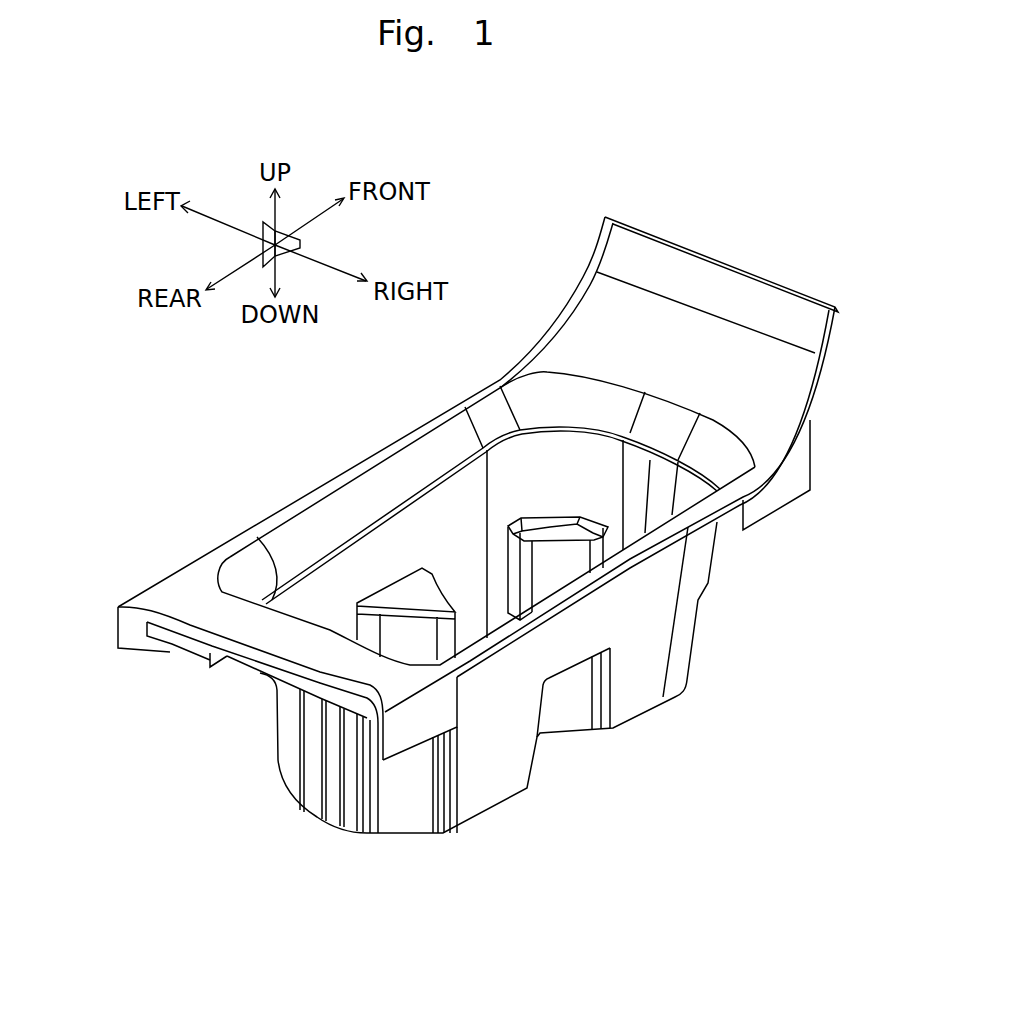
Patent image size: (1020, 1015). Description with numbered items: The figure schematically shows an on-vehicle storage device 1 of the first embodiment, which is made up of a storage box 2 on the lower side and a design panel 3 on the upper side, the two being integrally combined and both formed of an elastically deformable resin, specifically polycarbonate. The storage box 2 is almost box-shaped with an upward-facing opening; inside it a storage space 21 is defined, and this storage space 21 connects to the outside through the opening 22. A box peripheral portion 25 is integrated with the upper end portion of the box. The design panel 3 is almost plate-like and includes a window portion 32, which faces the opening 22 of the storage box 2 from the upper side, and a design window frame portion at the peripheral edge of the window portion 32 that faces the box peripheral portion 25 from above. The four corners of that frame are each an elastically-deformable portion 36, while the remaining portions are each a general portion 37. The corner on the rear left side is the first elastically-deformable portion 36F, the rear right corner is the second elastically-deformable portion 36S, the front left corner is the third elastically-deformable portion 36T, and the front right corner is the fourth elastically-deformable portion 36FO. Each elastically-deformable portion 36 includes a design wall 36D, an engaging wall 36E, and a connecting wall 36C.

The on-vehicle storage device 1 is at (232, 424).
The storage box 2 is at (728, 598).
The design panel 3 is at (579, 258).
The storage space 21 is at (553, 490).
The opening 22 is at (381, 544).
The box peripheral portion 25 is at (175, 633).
The window portion 32 is at (412, 436).
The elastically-deformable portion 36 is at (181, 587).
The connecting wall 36C is at (128, 624).
The design wall 36D is at (190, 604).
The engaging wall 36E is at (195, 655).
The first elastically-deformable portion 36F is at (203, 567).
The fourth elastically-deformable portion 36FO is at (753, 467).
The second elastically-deformable portion 36S is at (407, 688).
The third elastically-deformable portion 36T is at (530, 358).
The general portion 37 is at (283, 517).